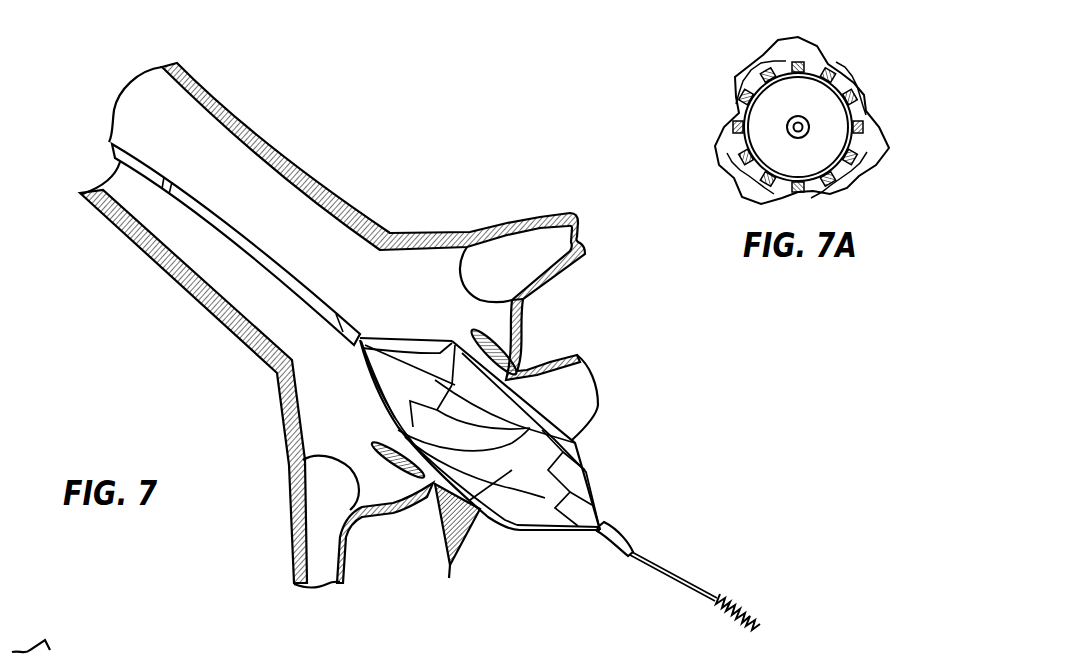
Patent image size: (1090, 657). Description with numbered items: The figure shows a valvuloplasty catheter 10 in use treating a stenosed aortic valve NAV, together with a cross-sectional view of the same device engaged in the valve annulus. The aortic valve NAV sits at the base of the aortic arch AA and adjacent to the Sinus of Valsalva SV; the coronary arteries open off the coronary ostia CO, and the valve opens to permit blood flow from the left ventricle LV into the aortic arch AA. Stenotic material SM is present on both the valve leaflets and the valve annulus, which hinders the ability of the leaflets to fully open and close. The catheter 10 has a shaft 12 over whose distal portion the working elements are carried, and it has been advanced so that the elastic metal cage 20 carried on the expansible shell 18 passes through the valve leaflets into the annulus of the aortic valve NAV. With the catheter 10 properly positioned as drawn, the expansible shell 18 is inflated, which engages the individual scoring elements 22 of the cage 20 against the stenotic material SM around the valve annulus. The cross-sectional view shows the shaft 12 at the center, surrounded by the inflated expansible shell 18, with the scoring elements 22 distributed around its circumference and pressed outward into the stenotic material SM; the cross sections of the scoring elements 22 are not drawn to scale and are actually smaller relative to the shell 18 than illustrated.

In FIG. 7, the valvuloplasty catheter 10 is at (220, 211).
In FIG. 7A, the shaft 12 is at (808, 128).
In FIG. 7, the expansible shell 18 is at (550, 513).
In FIG. 7A, the expansible shell 18 is at (817, 75).
In FIG. 7, the elastic metal cage 20 is at (560, 484).
In FIG. 7, the scoring elements 22 is at (455, 425).
In FIG. 7A, the scoring elements 22 is at (733, 137).
In FIG. 7, the aortic arch AA is at (247, 173).
In FIG. 7, the coronary ostia CO is at (518, 247).
In FIG. 7, the stenotic material SM is at (497, 343).
In FIG. 7A, the stenotic material SM is at (741, 72).
In FIG. 7, the left ventricle LV is at (578, 392).
In FIG. 7, the Sinus of Valsalva SV is at (303, 416).
In FIG. 7, the stenosed aortic valve NAV is at (400, 473).